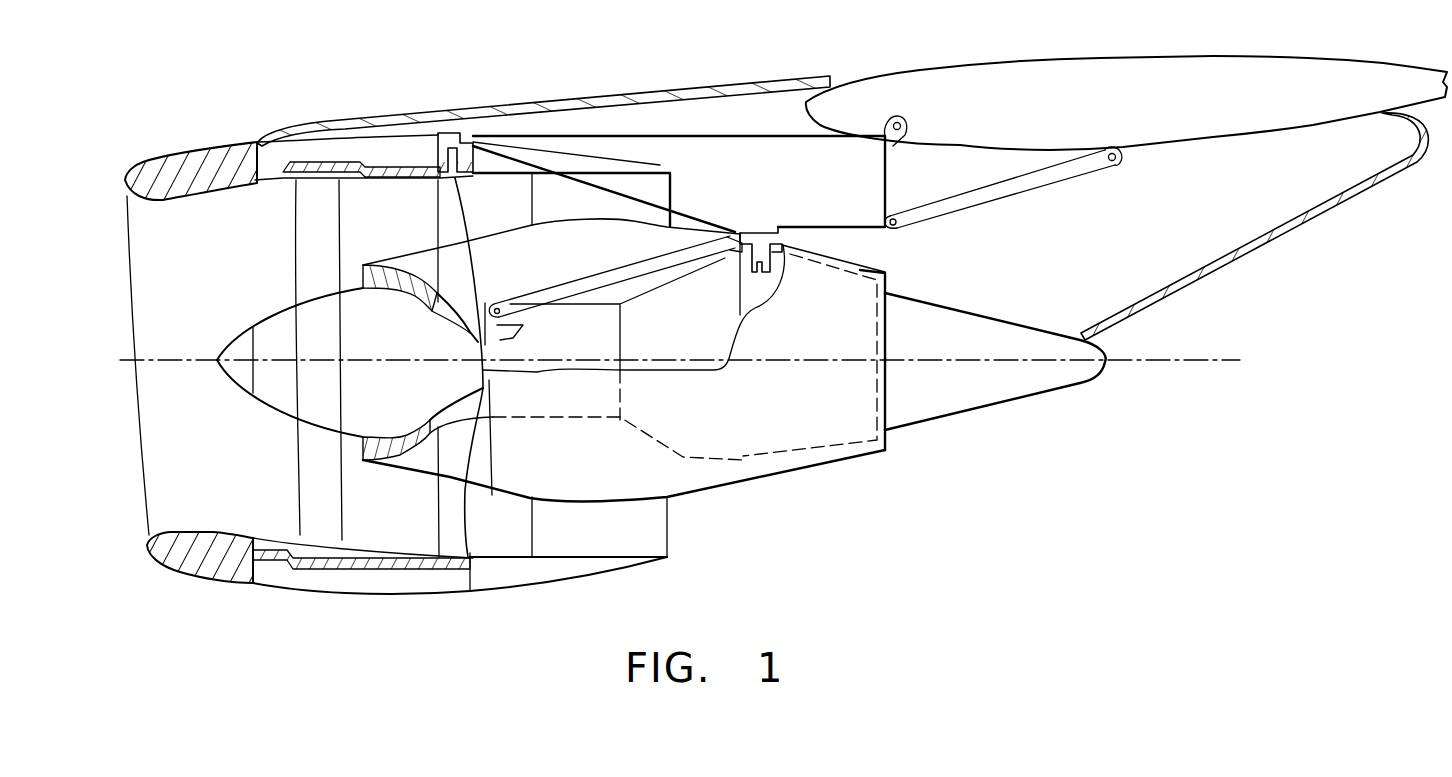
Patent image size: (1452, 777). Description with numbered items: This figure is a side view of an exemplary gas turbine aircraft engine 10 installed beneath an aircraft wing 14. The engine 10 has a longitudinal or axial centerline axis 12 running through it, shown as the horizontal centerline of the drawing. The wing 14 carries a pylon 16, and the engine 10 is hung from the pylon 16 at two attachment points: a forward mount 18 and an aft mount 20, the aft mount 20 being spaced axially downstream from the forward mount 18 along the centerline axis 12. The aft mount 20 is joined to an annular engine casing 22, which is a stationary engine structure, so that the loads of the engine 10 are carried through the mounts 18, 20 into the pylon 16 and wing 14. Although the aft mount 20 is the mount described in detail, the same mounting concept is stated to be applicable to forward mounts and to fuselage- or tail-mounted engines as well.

The aircraft engine 10 is at (193, 122).
The longitudinal or axial centerline axis 12 is at (153, 365).
The aircraft wing 14 is at (1200, 70).
The pylon 16 is at (757, 80).
The forward mount 18 is at (456, 148).
The aft mount 20 is at (766, 228).
The annular engine casing 22 is at (784, 245).